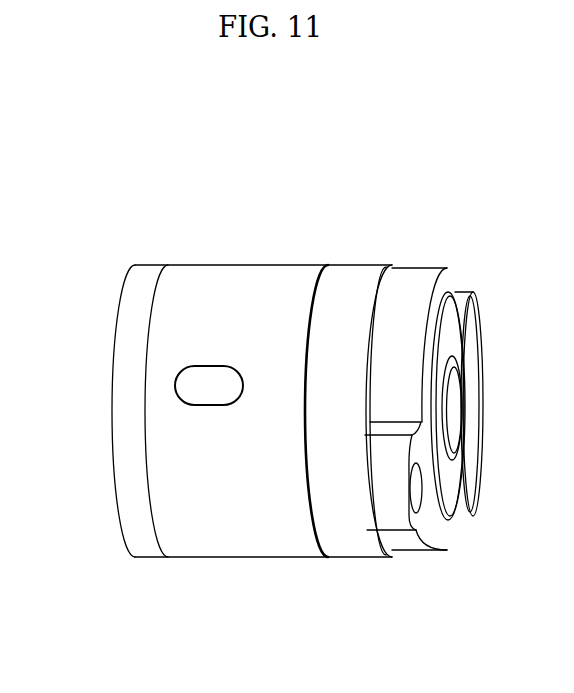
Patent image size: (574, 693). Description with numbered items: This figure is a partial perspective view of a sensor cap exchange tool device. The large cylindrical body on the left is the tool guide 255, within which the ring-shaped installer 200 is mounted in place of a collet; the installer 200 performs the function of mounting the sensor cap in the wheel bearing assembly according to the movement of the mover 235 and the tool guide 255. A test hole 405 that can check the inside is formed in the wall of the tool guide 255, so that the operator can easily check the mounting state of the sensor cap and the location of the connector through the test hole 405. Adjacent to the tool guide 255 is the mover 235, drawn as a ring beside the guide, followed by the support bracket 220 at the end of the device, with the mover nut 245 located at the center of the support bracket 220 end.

The installer 200 is at (142, 538).
The tool guide 255 is at (215, 542).
The test hole 405 is at (195, 383).
The mover 235 is at (353, 276).
The support bracket 220 is at (420, 275).
The mover nut 245 is at (455, 362).